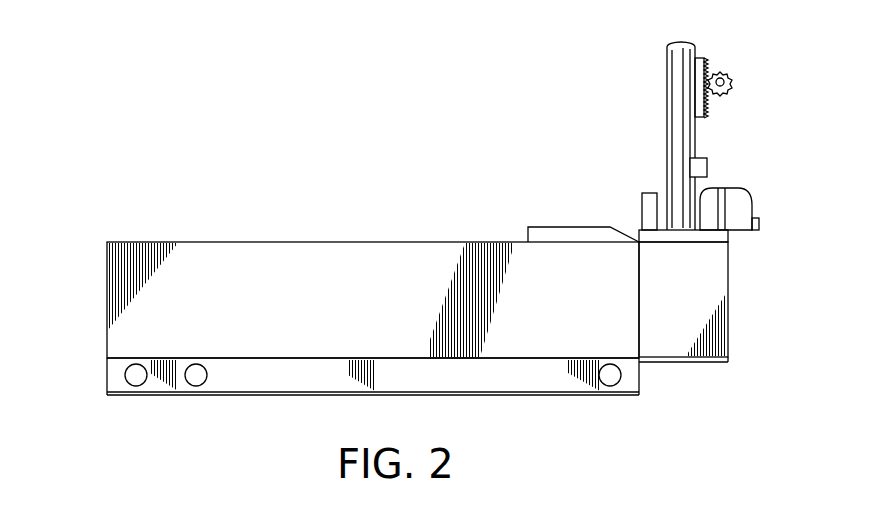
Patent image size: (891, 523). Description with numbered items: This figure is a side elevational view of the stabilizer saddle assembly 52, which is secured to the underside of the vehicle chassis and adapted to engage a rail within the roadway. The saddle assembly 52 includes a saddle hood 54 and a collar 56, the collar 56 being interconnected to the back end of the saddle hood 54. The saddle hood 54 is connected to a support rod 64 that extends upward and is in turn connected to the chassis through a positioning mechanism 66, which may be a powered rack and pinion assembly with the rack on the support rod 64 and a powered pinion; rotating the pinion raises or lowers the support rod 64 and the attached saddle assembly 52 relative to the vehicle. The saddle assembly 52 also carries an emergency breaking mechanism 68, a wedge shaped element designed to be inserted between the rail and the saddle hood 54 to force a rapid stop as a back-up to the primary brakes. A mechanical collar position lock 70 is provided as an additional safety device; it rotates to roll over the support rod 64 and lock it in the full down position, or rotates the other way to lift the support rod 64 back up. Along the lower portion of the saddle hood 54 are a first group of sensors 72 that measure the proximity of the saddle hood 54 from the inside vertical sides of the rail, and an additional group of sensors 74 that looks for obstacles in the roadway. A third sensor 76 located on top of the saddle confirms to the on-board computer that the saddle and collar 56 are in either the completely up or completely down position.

The stabilizer saddle assembly 52 is at (342, 185).
The saddle hood 54 is at (346, 309).
The collar 56 is at (693, 307).
The support rod 64 is at (696, 130).
The positioning mechanism 66 is at (708, 63).
The emergency breaking mechanism 68 is at (550, 227).
The collar position lock 70 is at (768, 186).
The sensors 72 is at (136, 378).
The sensors 74 is at (196, 378).
The third sensor 76 is at (642, 200).